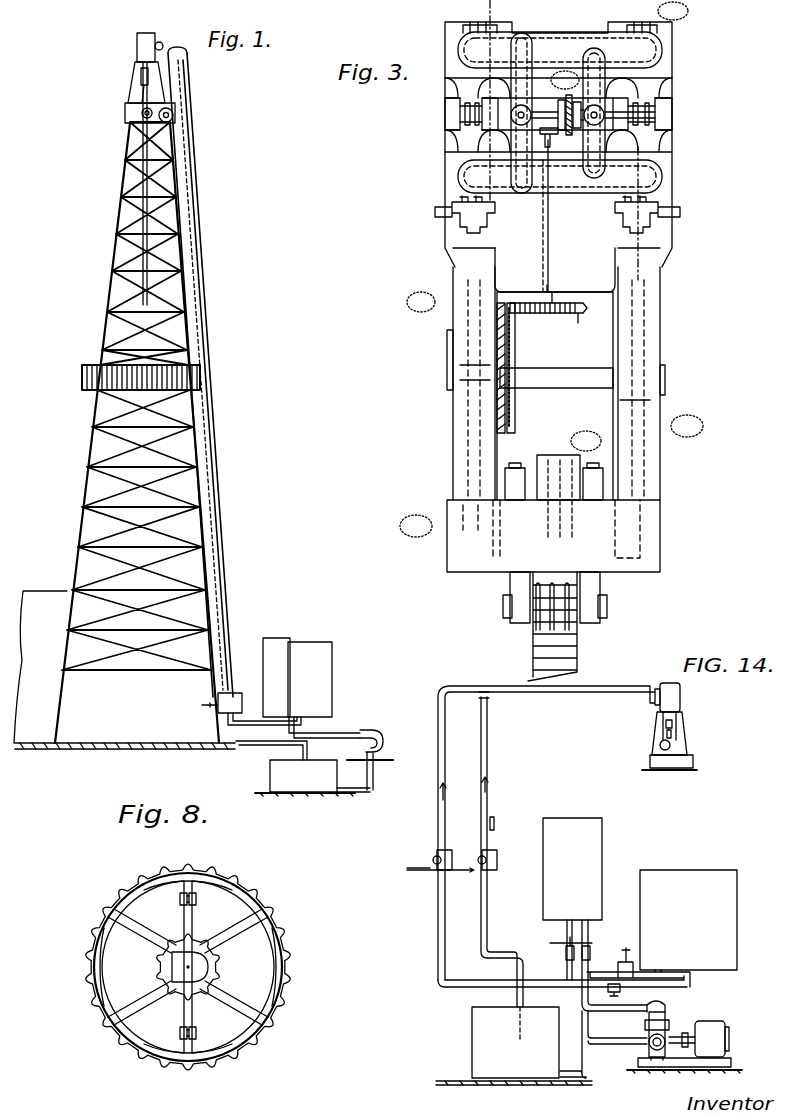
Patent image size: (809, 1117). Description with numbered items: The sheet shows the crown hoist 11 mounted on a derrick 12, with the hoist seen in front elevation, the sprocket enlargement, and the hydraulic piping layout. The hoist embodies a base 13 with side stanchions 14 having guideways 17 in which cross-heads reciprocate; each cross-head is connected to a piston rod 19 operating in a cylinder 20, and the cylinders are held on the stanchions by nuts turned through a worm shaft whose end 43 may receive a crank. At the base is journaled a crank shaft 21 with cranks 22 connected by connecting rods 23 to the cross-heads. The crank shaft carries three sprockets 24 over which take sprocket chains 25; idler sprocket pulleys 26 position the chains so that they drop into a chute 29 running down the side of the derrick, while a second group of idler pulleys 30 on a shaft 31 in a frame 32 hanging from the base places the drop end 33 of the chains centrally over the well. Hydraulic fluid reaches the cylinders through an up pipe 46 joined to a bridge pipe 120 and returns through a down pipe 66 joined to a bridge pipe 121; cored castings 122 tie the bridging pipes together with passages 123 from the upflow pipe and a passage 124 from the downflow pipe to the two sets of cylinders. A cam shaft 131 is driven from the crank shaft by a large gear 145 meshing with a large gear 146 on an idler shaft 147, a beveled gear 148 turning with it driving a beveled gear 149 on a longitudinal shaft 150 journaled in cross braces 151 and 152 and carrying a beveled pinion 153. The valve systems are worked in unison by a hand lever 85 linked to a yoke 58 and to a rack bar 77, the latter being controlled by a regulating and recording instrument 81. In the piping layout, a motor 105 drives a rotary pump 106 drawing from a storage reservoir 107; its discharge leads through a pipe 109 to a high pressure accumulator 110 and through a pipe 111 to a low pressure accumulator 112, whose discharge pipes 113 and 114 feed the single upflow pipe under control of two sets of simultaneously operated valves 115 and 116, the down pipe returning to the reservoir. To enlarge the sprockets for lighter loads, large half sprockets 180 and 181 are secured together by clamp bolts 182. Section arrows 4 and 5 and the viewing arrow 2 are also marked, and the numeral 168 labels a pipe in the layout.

In FIG. 3, the well pumping unit 2 is at (409, 124).
In FIG. 3, the section line 4- 4 is at (479, 8).
In FIG. 3, the section line 5- 5 is at (647, 166).
In FIG. 1, the crown hoist 11 is at (119, 79).
In FIG. 3, the crown hoist 11 is at (714, 125).
In FIG. 14, the crown hoist 11 is at (688, 721).
In FIG. 1, the derrick 12 is at (107, 292).
In FIG. 3, the base 13 is at (662, 560).
In FIG. 3, the side stanchions 14 is at (453, 453).
In FIG. 3, the guideways 17 is at (453, 273).
In FIG. 3, the piston rod 19 is at (472, 293).
In FIG. 3, the cylinders 20 is at (673, 188).
In FIG. 8, the crank shaft 21 is at (200, 978).
In FIG. 8, the cranks 22 is at (180, 977).
In FIG. 3, the connecting rods 23 is at (640, 430).
In FIG. 8, the sprockets 24 is at (213, 967).
In FIG. 3, the sprockets 24 is at (560, 472).
In FIG. 1, the sprocket chains 25 is at (173, 108).
In FIG. 3, the sprocket chains 25 is at (553, 455).
In FIG. 3, the idler sprocket pulleys 26 is at (445, 73).
In FIG. 1, the chute 29 is at (190, 218).
In FIG. 3, the idler pulleys 30 is at (535, 627).
In FIG. 3, the shaft 31 is at (503, 610).
In FIG. 3, the frame 32 is at (515, 580).
In FIG. 1, the drop end 33 is at (128, 152).
In FIG. 3, the drop end 33 is at (537, 657).
In FIG. 3, the end of worm shaft 43 is at (681, 213).
In FIG. 1, the upflow pipe 46 is at (158, 44).
In FIG. 3, the upflow pipe 46 is at (514, 117).
In FIG. 14, the upflow pipe 46 is at (437, 912).
In FIG. 14, the yoke 58 is at (453, 847).
In FIG. 1, the downflow pipe 66 is at (186, 65).
In FIG. 3, the downflow pipe 66 is at (605, 111).
In FIG. 14, the downflow pipe 66 is at (482, 908).
In FIG. 14, the rack bar 77 is at (500, 848).
In FIG. 14, the regulating and recording instrument 81 is at (495, 815).
In FIG. 14, the hand lever 85 is at (460, 875).
In FIG. 14, the motor 105 is at (717, 1027).
In FIG. 1, the pump 106 is at (372, 722).
In FIG. 14, the pump 106 is at (677, 1029).
In FIG. 1, the storage reservoir 107 is at (277, 770).
In FIG. 14, the storage reservoir 107 is at (483, 1040).
In FIG. 14, the pipe 109 is at (589, 938).
In FIG. 1, the high pressure accumulator 110 is at (327, 662).
In FIG. 14, the high pressure accumulator 110 is at (590, 852).
In FIG. 14, the pipe 111 is at (630, 961).
In FIG. 1, the low pressure accumulator 112 is at (272, 642).
In FIG. 14, the low pressure accumulator 112 is at (728, 900).
In FIG. 14, the discharge pipe 113 is at (566, 930).
In FIG. 14, the discharge pipe 114 is at (662, 992).
In FIG. 14, the valves 115 is at (573, 957).
In FIG. 14, the valves 116 is at (616, 990).
In FIG. 3, the bridge pipe 120 is at (535, 50).
In FIG. 3, the bridge pipe 121 is at (597, 85).
In FIG. 3, the cored castings 122 is at (581, 34).
In FIG. 3, the passages 123 is at (567, 43).
In FIG. 3, the passage 124 is at (612, 58).
In FIG. 3, the cam shaft 131 is at (540, 110).
In FIG. 3, the large gear 145 is at (520, 475).
In FIG. 3, the large gear 146 is at (500, 408).
In FIG. 3, the idler shaft 147 is at (573, 378).
In FIG. 3, the beveled gear 148 is at (517, 367).
In FIG. 3, the beveled gear 149 is at (553, 314).
In FIG. 3, the longitudinal shaft 150 is at (553, 232).
In FIG. 3, the cross brace 151 is at (563, 258).
In FIG. 3, the cross brace 152 is at (543, 187).
In FIG. 3, the beveled pinion 153 is at (557, 135).
In FIG. 14, the suction pipe 168 is at (597, 1012).
In FIG. 8, the large half sprocket 180 is at (108, 893).
In FIG. 8, the large half sprocket 181 is at (248, 882).
In FIG. 8, the clamp bolts 182 is at (202, 903).